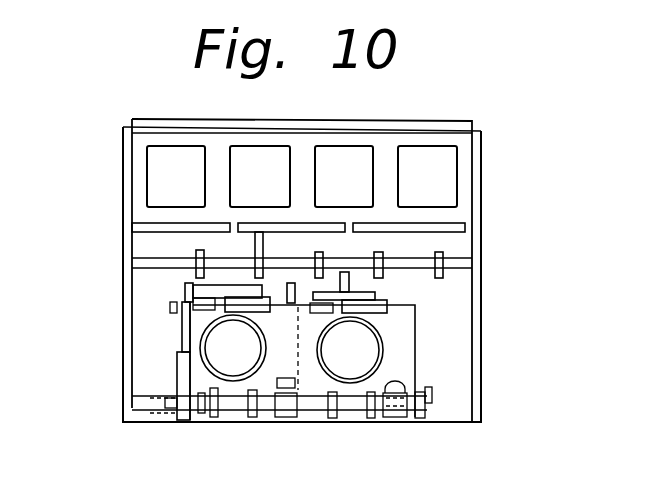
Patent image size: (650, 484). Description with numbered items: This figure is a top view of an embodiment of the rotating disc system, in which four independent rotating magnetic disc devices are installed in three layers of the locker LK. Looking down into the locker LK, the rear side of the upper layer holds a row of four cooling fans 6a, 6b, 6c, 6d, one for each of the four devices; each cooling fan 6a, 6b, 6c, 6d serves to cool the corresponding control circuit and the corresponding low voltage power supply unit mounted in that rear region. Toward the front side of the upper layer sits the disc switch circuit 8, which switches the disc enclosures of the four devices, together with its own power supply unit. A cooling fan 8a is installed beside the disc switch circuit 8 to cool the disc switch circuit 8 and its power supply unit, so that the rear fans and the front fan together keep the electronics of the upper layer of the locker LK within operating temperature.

The locker LK is at (128, 373).
The cooling fan 6a is at (158, 165).
The cooling fan 6b is at (237, 198).
The cooling fan 6c is at (358, 187).
The cooling fan 6d is at (443, 157).
The disc switch circuit 8 is at (405, 378).
The cooling fan 8a is at (367, 342).